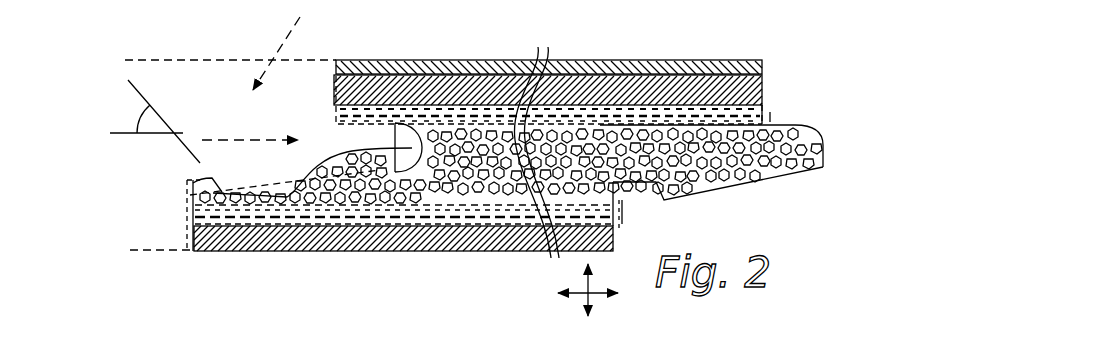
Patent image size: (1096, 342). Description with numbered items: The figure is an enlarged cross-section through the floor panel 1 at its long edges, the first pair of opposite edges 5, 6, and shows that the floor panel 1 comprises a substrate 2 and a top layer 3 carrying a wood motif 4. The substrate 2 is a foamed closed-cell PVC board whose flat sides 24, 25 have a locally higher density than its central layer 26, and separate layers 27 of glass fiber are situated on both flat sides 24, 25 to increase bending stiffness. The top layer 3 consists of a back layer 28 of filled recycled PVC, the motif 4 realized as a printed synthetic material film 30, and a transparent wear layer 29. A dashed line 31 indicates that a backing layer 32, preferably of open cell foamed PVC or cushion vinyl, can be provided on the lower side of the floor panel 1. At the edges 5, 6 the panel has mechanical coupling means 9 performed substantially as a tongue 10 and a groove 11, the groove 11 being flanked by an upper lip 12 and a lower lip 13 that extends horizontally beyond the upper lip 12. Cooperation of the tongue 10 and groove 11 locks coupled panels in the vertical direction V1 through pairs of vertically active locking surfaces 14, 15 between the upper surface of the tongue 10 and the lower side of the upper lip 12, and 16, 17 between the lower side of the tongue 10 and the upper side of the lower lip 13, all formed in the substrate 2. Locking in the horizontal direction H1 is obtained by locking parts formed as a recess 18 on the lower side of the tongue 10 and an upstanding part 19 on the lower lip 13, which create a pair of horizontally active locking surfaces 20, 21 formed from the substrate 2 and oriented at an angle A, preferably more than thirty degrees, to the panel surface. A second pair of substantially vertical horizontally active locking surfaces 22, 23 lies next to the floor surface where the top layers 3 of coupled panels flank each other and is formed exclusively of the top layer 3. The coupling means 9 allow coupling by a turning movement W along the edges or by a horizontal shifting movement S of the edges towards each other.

The floor panel 1 is at (173, 60).
The substrate 2 is at (492, 146).
The top layer 3 is at (503, 155).
The motif 4 is at (463, 61).
The first edge of the first pair of opposite edges 5 is at (802, 88).
The second edge of the first pair of opposite edges 6 is at (227, 90).
The coupling means 9 is at (250, 96).
The tongue 10 is at (792, 152).
The groove 11 is at (265, 222).
The upper lip 12 is at (376, 130).
The lower lip 13 is at (238, 220).
The vertically active locking surface 14 is at (372, 133).
The vertically active locking surface 15 is at (390, 123).
The vertically active locking surface 16 is at (375, 170).
The vertically active locking surface 17 is at (790, 158).
The recess 18 is at (185, 233).
The upstanding part 19 is at (210, 200).
The horizontally active locking surface 20 is at (198, 181).
The horizontally active locking surface 21 is at (222, 190).
The horizontally active locking surface 22 is at (763, 60).
The horizontally active locking surface 23 is at (335, 75).
The flat side of the substrate 24 is at (790, 106).
The flat side of the substrate 25 is at (620, 222).
The central layer 26 is at (507, 167).
The separate layers 27 is at (583, 103).
The back layer 28 is at (650, 61).
The wear layer 29 is at (570, 61).
The synthetic material film 30 is at (694, 61).
The dashed line 31 is at (302, 252).
The backing layer 32 is at (195, 250).
The angle A is at (153, 121).
The horizontal shifting movement S is at (236, 139).
The turning movement W is at (283, 33).
The vertical direction V1 is at (586, 288).
The horizontal direction H1 is at (592, 299).